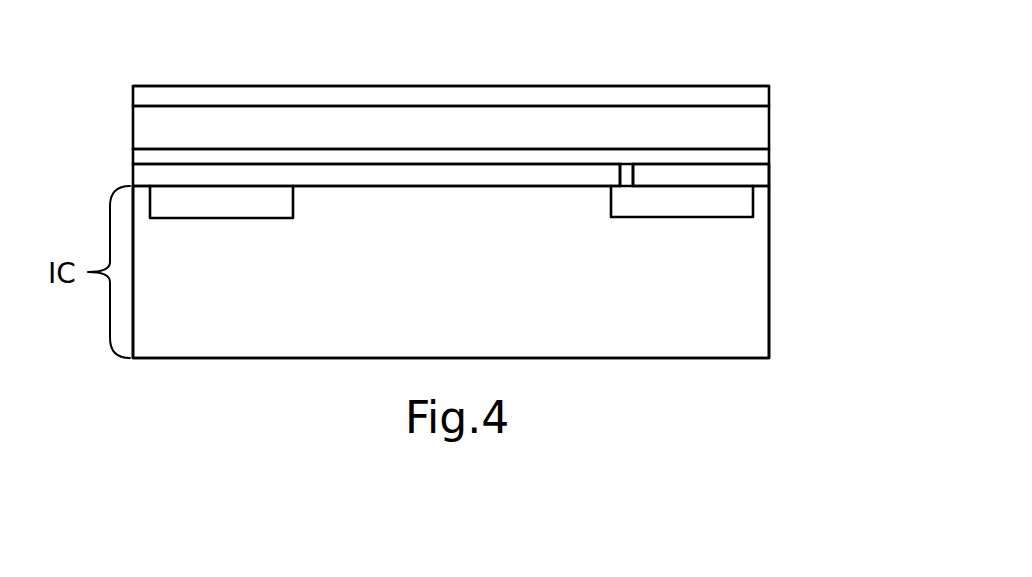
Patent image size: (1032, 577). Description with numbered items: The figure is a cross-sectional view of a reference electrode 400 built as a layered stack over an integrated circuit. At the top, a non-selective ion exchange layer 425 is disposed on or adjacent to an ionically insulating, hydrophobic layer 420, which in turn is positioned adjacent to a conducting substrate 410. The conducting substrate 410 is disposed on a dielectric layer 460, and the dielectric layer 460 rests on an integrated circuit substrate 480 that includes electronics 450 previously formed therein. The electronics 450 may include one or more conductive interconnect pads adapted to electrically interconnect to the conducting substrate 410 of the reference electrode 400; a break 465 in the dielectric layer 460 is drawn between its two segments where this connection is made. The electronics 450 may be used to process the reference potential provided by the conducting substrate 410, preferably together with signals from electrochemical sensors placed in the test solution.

The reference electrode 400 is at (780, 258).
The conducting substrate 410 is at (285, 158).
The ionically insulating, hydrophobic layer 420 is at (455, 123).
The non-selective ion exchange layer 425 is at (623, 97).
The electronics 450 is at (223, 205).
The dielectric layer 460 is at (148, 174).
The gap in conductive layer 465 is at (628, 174).
The integrated circuit substrate 480 is at (462, 313).